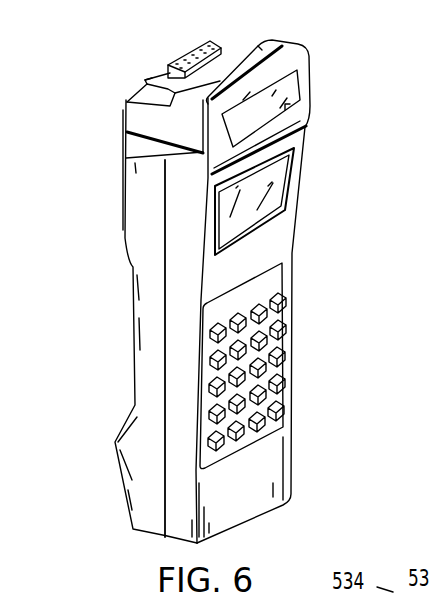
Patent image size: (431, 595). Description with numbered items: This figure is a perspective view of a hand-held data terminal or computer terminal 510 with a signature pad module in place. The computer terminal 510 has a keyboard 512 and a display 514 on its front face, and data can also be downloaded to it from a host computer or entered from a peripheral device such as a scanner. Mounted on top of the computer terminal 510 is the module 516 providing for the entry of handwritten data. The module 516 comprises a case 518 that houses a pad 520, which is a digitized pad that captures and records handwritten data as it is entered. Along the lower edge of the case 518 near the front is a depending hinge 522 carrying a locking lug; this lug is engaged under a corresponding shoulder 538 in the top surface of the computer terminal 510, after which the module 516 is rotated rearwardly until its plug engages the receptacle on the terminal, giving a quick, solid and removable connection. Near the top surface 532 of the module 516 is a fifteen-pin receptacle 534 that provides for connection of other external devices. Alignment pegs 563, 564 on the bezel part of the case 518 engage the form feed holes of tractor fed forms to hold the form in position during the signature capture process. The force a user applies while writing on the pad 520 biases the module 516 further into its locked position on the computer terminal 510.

The hand-held computer terminal 510 is at (293, 310).
The keyboard 512 is at (295, 368).
The display 514 is at (282, 205).
The module 516 is at (312, 52).
The case 518 is at (125, 122).
The pad 520 is at (296, 102).
The hinge 522 is at (305, 145).
The top surface 532 is at (153, 78).
The receptacle 534 is at (197, 45).
The shoulder 538 is at (208, 178).
The alignment peg 563 is at (259, 47).
The alignment peg 564 is at (208, 177).